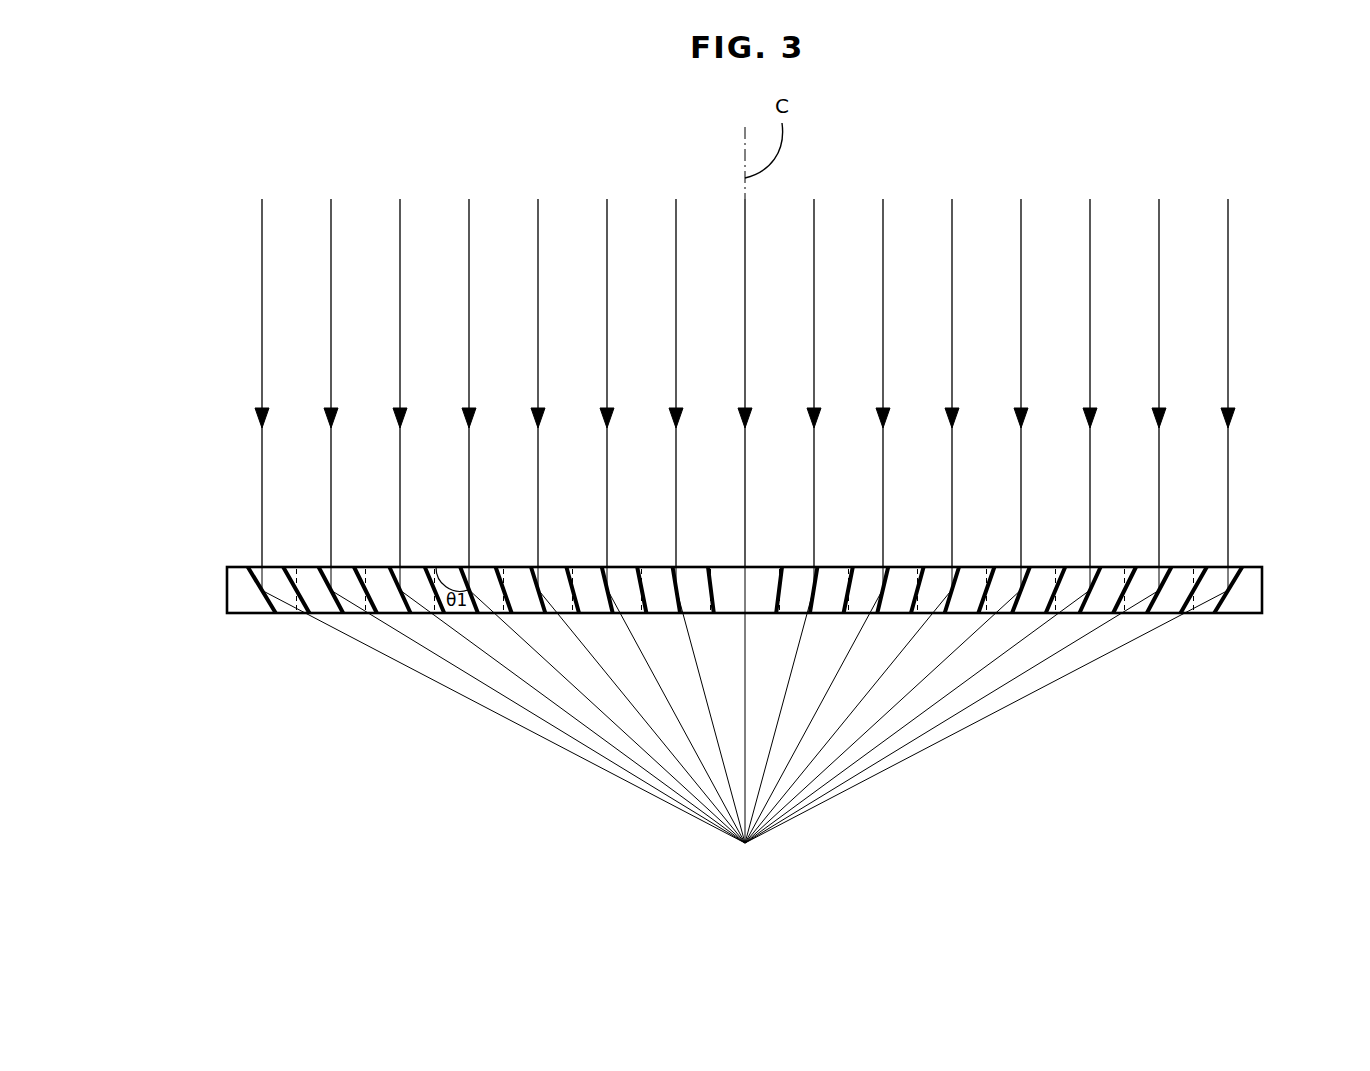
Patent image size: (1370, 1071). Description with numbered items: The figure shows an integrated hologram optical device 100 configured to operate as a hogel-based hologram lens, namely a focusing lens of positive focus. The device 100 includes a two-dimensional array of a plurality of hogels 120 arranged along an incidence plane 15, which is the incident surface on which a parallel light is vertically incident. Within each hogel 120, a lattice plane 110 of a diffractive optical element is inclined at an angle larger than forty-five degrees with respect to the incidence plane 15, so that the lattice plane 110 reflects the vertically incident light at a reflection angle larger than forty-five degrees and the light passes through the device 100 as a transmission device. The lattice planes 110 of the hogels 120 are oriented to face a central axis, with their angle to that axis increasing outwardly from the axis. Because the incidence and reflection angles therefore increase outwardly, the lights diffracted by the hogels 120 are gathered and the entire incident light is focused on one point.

The integrated hologram optical device 100 is at (761, 600).
The incidence plane 15 is at (239, 567).
The lattice plane 110 is at (257, 568).
The hogels 120 is at (1242, 600).